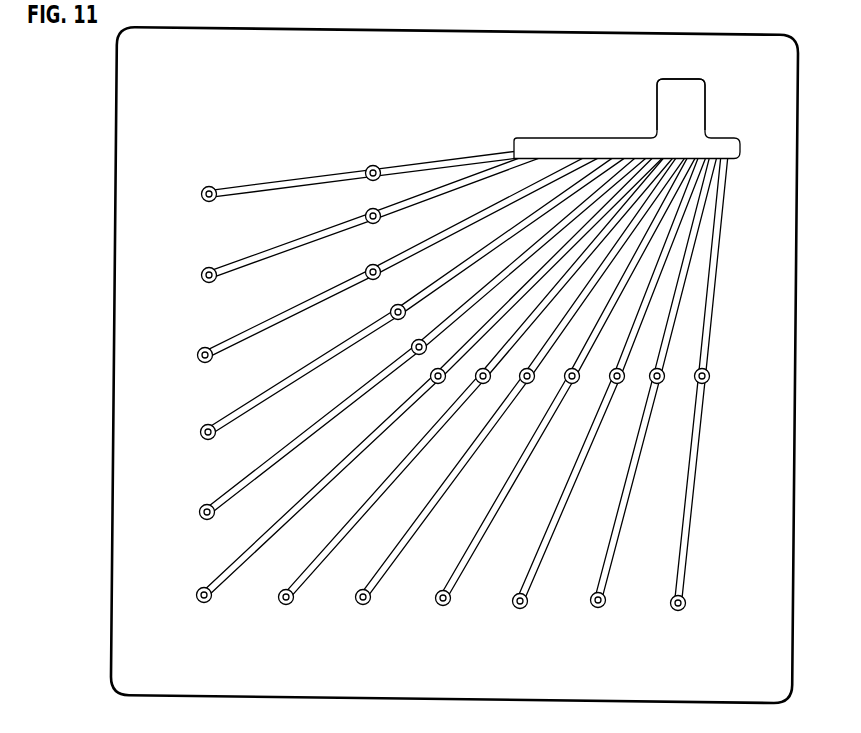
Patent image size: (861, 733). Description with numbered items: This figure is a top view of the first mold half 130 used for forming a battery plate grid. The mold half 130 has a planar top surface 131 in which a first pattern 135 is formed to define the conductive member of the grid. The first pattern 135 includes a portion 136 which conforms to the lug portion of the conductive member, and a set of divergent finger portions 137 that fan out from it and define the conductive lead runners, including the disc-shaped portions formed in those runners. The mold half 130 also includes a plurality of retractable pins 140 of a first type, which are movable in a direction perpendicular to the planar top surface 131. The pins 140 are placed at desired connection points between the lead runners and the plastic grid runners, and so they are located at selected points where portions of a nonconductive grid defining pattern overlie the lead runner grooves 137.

The first mold half 130 is at (848, 111).
The planar top surface 131 is at (771, 211).
The first pattern 135 is at (546, 108).
The portion conforming to the lug portion 136 is at (692, 93).
The divergent finger portions 137 is at (684, 285).
The retractable pins 140 is at (367, 177).